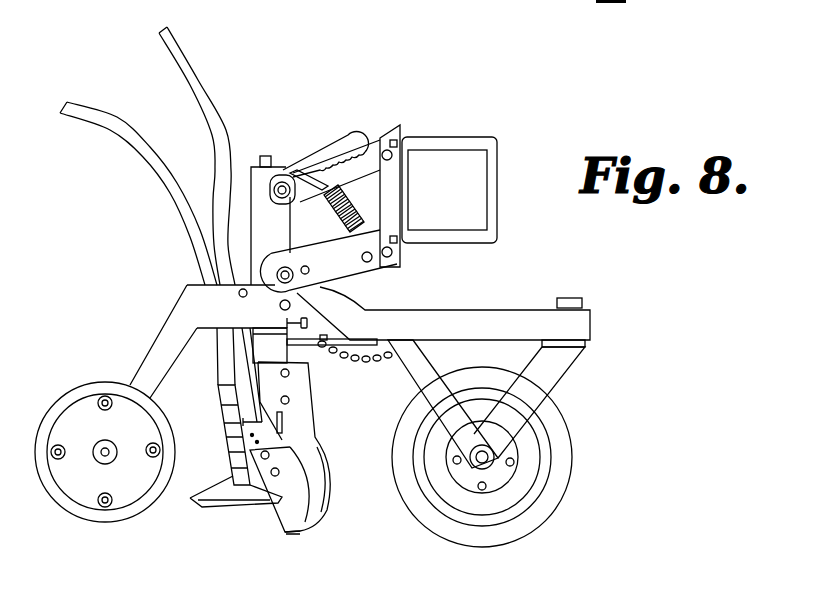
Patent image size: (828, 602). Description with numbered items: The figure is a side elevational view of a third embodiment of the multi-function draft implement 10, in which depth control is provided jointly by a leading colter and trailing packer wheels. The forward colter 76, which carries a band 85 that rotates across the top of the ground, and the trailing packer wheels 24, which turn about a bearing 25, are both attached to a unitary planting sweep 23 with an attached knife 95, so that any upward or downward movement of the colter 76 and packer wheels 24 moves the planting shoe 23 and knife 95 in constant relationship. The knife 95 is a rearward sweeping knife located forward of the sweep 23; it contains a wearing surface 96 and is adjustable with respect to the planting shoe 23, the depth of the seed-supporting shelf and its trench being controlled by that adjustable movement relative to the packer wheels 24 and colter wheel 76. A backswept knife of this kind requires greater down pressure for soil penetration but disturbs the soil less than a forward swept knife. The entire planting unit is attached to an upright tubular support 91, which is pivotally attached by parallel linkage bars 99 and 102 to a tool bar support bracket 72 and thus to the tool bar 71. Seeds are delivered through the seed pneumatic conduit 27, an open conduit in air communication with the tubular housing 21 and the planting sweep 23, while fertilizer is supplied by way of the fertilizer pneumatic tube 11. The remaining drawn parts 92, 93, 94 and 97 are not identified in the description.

The multi-function draft implement 10 is at (133, 212).
The fertilizer pneumatic tube 11 is at (190, 66).
The seed pneumatic conduit 27 is at (128, 147).
The upright tubular support 91 is at (260, 220).
The parallel linkage bar 99 is at (318, 170).
The spring 97 is at (340, 223).
The parallel linkage bar 102 is at (343, 268).
The tool bar support bracket 72 is at (385, 134).
The tool bar 71 is at (470, 187).
The frame beam 92 is at (475, 312).
The strut 94 is at (417, 380).
The strut 93 is at (565, 368).
The colter 76 is at (563, 458).
The band 85 is at (538, 495).
The packer wheels 24 is at (53, 415).
The bearing 25 is at (108, 448).
The tubular housing 21 is at (232, 436).
The planting sweep 23 is at (231, 509).
The wearing surface 96 is at (328, 510).
The knife 95 is at (297, 520).